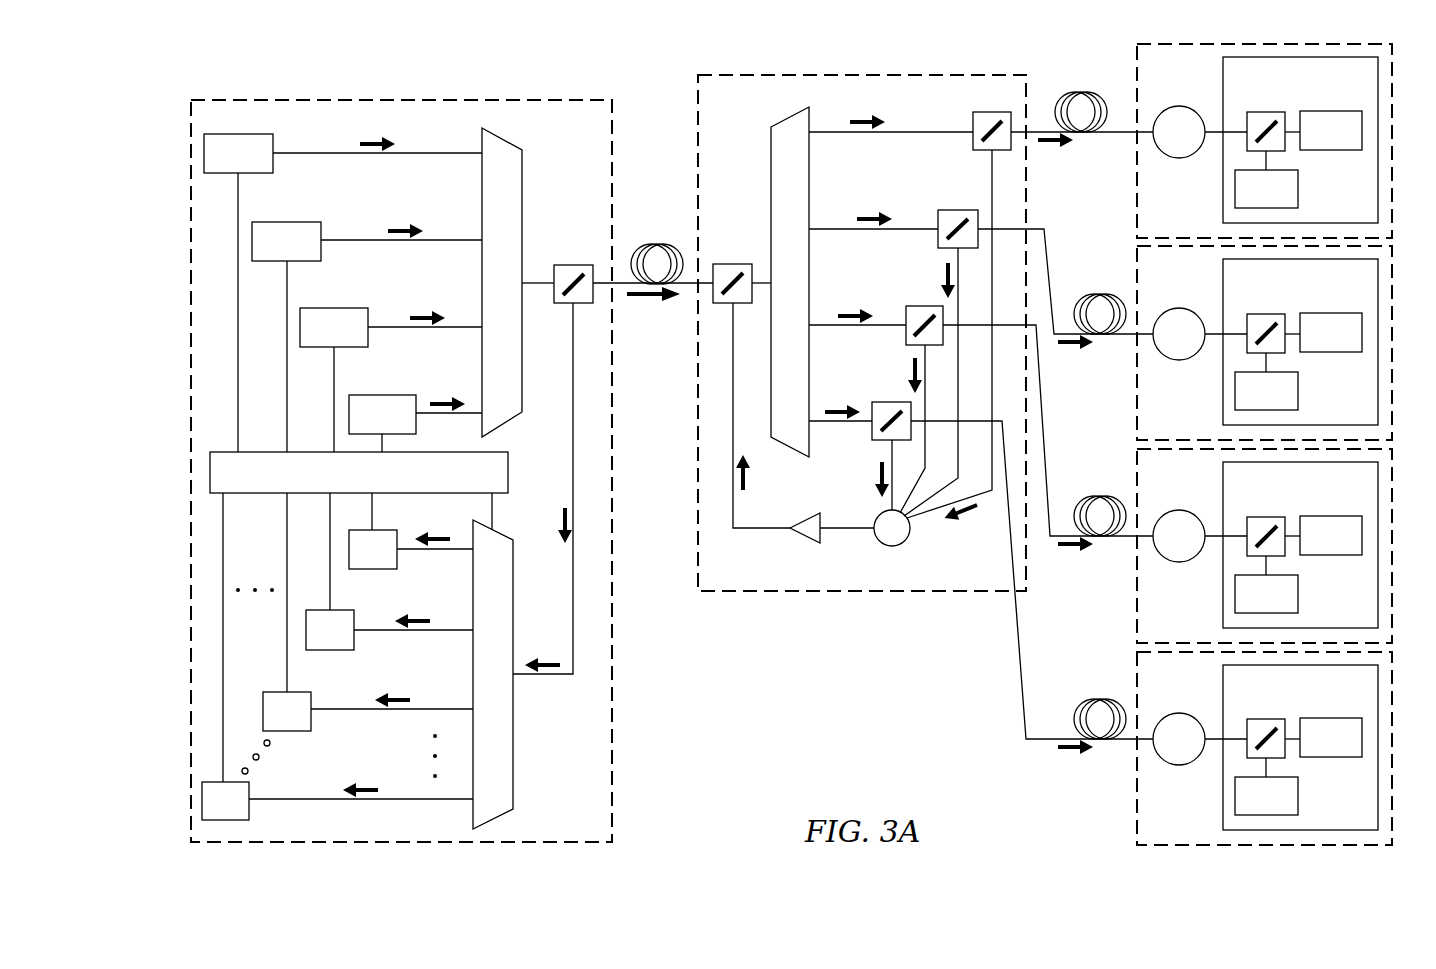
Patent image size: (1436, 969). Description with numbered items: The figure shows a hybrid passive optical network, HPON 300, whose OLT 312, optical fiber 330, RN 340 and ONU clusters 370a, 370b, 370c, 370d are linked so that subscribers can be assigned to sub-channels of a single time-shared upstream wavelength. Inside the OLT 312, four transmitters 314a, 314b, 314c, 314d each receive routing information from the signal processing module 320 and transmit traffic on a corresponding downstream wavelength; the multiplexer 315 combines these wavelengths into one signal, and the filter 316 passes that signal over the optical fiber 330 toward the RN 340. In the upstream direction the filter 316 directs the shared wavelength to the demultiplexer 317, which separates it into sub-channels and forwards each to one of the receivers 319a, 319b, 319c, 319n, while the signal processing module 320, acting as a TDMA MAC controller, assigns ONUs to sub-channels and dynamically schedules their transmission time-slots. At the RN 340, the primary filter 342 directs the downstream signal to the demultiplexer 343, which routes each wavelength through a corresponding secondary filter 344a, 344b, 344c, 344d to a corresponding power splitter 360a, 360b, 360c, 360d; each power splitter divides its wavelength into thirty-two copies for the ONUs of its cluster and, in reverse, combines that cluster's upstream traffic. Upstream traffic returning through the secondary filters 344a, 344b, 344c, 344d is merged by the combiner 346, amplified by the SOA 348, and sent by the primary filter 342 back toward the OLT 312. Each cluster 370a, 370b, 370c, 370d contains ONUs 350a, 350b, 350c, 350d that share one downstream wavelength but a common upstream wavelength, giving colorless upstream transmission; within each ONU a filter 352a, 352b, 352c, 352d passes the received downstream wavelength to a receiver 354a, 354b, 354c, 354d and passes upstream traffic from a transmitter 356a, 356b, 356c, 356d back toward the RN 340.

The Hybrid PON 300 is at (280, 90).
The OLT 312 is at (597, 137).
The transmitter 314a is at (273, 140).
The transmitter 314b is at (295, 222).
The transmitter 314c is at (343, 308).
The transmitter 314d is at (393, 395).
The multiplexer 315 is at (524, 190).
The filter 316 is at (566, 265).
The demultiplexer 317 is at (513, 745).
The receiver 319a is at (397, 559).
The receiver 319b is at (354, 640).
The receiver 319c is at (311, 720).
The receiver 319n is at (249, 810).
The signal processing module 320 is at (508, 472).
The optical fiber 330 is at (655, 244).
The RN 340 is at (750, 110).
The primary filter 342 is at (726, 264).
The demultiplexer 343 is at (771, 185).
The secondary filter 344a is at (973, 120).
The secondary filter 344b is at (950, 210).
The secondary filter 344c is at (910, 306).
The secondary filter 344d is at (885, 402).
The combiner 346 is at (880, 548).
The SOA 348 is at (806, 545).
The ONU 350a is at (1220, 175).
The ONU 350b is at (1220, 377).
The ONU 350c is at (1220, 580).
The ONU 350d is at (1220, 782).
The filter 352a is at (1270, 112).
The filter 352b is at (1270, 314).
The filter 352c is at (1270, 517).
The filter 352d is at (1270, 719).
The receiver 354a is at (1298, 190).
The receiver 354b is at (1298, 392).
The receiver 354c is at (1298, 595).
The receiver 354d is at (1298, 797).
The transmitter 356a is at (1333, 111).
The transmitter 356b is at (1333, 313).
The transmitter 356c is at (1333, 516).
The transmitter 356d is at (1333, 718).
The power splitter 360a is at (1178, 106).
The power splitter 360b is at (1178, 308).
The power splitter 360c is at (1178, 510).
The power splitter 360d is at (1178, 713).
The ONU cluster 370a is at (1134, 197).
The ONU cluster 370b is at (1134, 399).
The ONU cluster 370c is at (1134, 602).
The ONU cluster 370d is at (1134, 804).